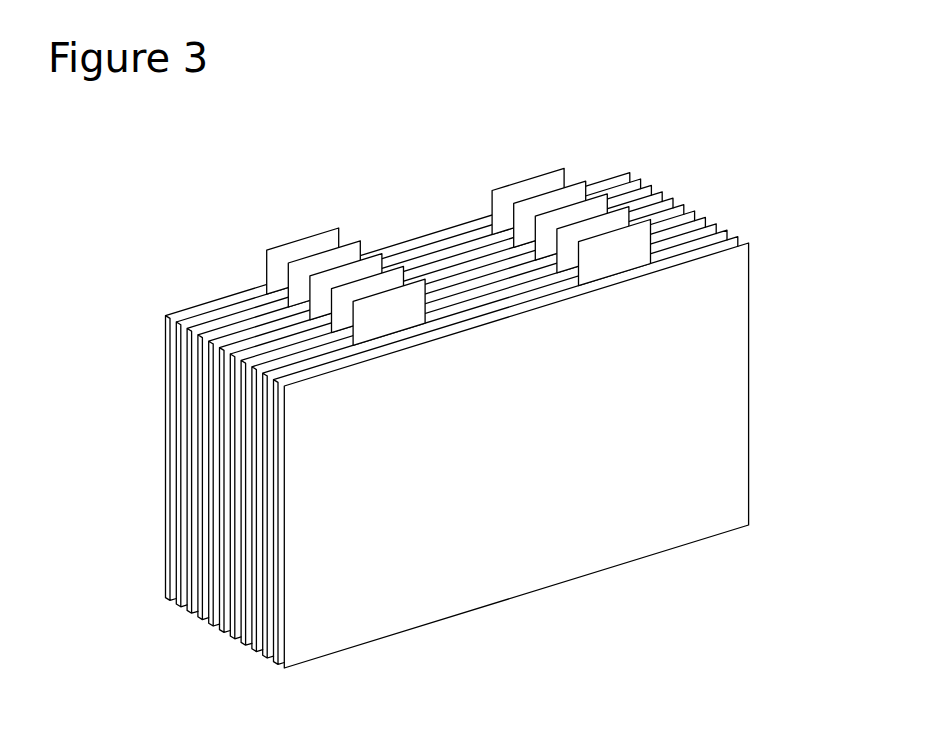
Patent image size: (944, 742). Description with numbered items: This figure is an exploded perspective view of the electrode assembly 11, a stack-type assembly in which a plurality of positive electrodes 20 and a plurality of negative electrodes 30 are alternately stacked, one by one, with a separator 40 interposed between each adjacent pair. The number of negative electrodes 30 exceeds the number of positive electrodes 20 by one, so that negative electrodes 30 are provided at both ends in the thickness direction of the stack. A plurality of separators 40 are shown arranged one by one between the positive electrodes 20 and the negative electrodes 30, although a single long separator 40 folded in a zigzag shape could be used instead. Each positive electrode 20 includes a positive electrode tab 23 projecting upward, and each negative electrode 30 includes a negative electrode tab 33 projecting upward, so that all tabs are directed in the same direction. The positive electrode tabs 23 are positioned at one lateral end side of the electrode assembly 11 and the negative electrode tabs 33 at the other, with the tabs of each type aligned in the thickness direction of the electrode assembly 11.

The electrode assembly 11 is at (742, 128).
The positive electrode 20 is at (262, 567).
The positive electrode tab 23 is at (543, 188).
The negative electrode 30 is at (284, 652).
The negative electrode tab 33 is at (314, 243).
The separator 40 is at (276, 600).